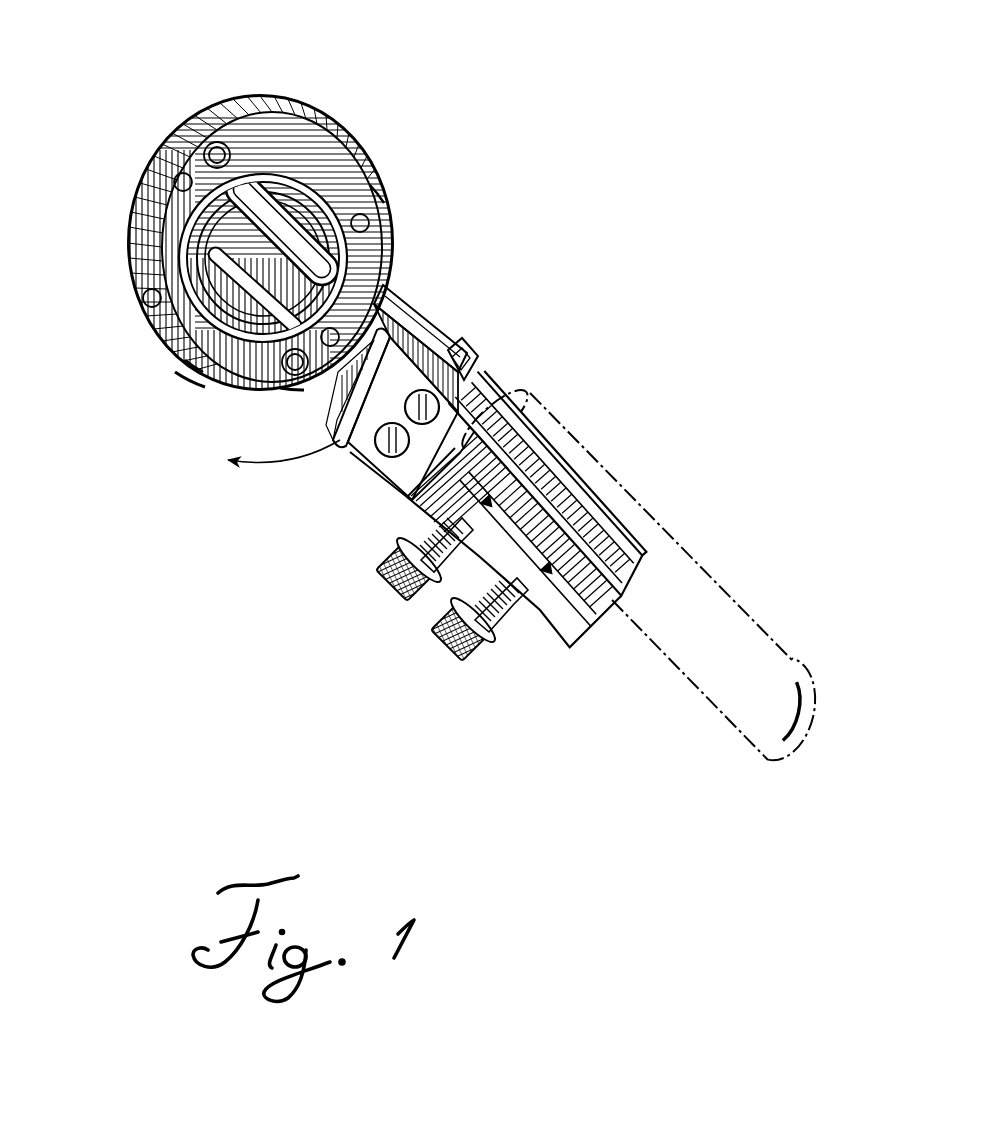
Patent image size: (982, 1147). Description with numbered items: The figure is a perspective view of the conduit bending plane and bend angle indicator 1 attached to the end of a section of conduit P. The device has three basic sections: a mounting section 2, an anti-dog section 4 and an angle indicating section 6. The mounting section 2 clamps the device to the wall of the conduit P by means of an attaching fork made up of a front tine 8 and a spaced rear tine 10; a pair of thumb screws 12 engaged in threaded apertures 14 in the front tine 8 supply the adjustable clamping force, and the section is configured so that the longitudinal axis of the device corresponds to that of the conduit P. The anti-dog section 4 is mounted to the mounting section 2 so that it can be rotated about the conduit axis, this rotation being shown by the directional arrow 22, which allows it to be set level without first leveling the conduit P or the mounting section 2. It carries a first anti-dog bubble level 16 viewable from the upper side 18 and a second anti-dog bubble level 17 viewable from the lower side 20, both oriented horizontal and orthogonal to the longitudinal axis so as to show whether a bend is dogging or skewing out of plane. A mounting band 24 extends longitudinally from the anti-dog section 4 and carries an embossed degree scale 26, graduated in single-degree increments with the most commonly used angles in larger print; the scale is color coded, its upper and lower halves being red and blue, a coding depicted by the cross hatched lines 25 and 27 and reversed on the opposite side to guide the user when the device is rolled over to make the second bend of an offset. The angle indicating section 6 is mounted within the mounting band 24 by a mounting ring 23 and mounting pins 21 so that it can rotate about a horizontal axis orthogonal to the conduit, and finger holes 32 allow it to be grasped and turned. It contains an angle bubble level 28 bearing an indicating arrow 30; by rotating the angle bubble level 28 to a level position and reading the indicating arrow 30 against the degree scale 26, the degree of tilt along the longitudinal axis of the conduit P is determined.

The conduit bending plane and bend angle indicator 1 is at (727, 150).
The mounting section 2 is at (697, 347).
The anti-dog section 4 is at (600, 242).
The angle indicating section 6 is at (568, 122).
The front tine 8 is at (575, 630).
The rear tine 10 is at (640, 562).
The thumb screws 12 is at (398, 604).
The threaded apertures 14 is at (540, 620).
The first anti-dog bubble level 16 is at (455, 347).
The second anti-dog bubble level 17 is at (367, 457).
The upper side 18 is at (413, 317).
The lower side 20 is at (405, 490).
The mounting pins 21 is at (290, 387).
The directional arrow 22 is at (448, 323).
The mounting ring 23 is at (362, 162).
The mounting band 24 is at (273, 100).
The cross hatched lines 25 is at (330, 148).
The degree scale 26 is at (127, 257).
The cross hatched lines 27 is at (187, 383).
The angle bubble level 28 is at (200, 217).
The indicating arrow 30 is at (190, 143).
The finger holes 32 is at (378, 195).
The conduit P is at (757, 617).